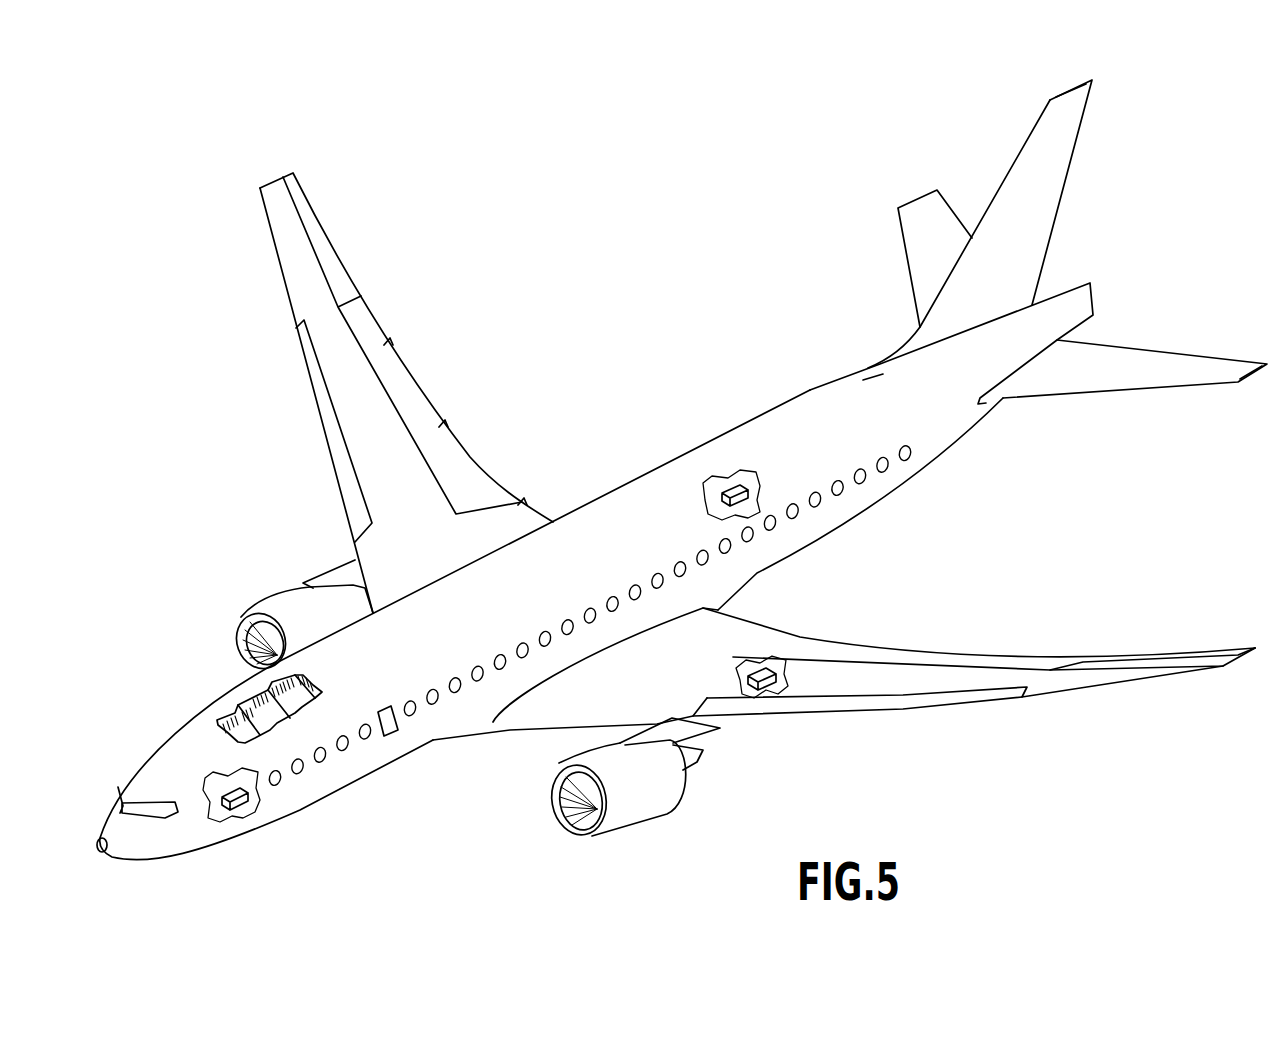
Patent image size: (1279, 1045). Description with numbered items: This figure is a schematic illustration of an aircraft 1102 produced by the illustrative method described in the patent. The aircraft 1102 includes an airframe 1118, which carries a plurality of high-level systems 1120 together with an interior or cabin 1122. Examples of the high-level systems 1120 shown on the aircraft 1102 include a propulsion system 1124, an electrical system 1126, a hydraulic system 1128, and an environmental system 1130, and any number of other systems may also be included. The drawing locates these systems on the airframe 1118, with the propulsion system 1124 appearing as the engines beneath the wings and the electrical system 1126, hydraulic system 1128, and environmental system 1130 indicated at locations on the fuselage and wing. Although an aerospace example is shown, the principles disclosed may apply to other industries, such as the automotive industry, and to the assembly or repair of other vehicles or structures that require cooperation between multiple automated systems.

The aircraft 1102 is at (681, 471).
The airframe 1118 is at (226, 674).
The high-level systems 1120 is at (1047, 601).
The interior or cabin 1122 is at (273, 740).
The propulsion system 1124 is at (287, 600).
The electrical system 1126 is at (225, 788).
The hydraulic system 1128 is at (763, 668).
The environmental system 1130 is at (727, 492).